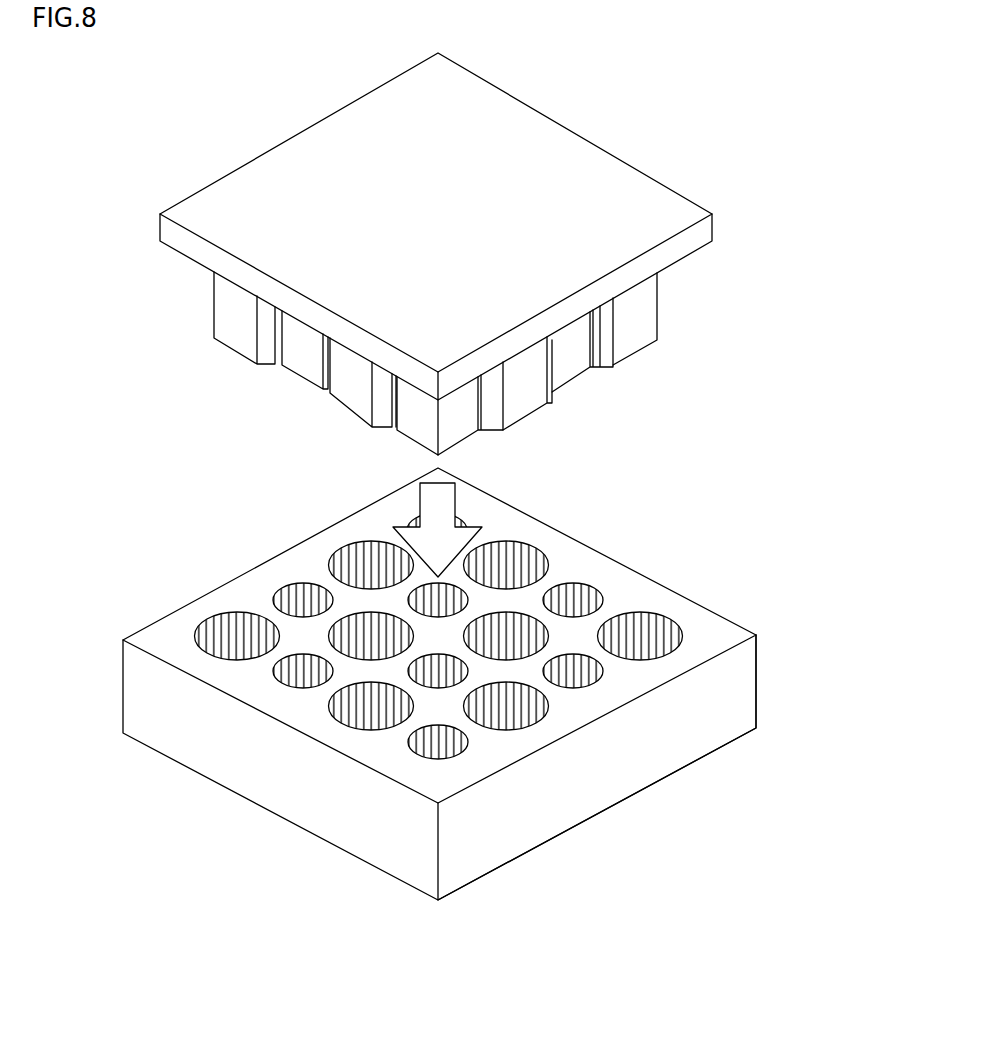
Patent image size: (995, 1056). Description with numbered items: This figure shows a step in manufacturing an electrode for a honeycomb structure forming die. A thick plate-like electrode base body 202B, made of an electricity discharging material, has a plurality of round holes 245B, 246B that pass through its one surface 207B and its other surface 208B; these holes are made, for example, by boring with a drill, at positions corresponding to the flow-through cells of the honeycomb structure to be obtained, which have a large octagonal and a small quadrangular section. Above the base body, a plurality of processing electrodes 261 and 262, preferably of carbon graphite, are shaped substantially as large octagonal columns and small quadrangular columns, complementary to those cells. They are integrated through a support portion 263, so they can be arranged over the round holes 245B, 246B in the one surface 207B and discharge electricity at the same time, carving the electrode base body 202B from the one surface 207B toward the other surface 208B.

The support portion 263 is at (703, 229).
The processing electrodes 261 is at (340, 395).
The processing electrodes 262 is at (583, 470).
The electrode base body 202B is at (750, 693).
The one surface 207B is at (717, 632).
The other surface 208B is at (667, 753).
The round holes 245B is at (356, 722).
The round holes 246B is at (296, 675).